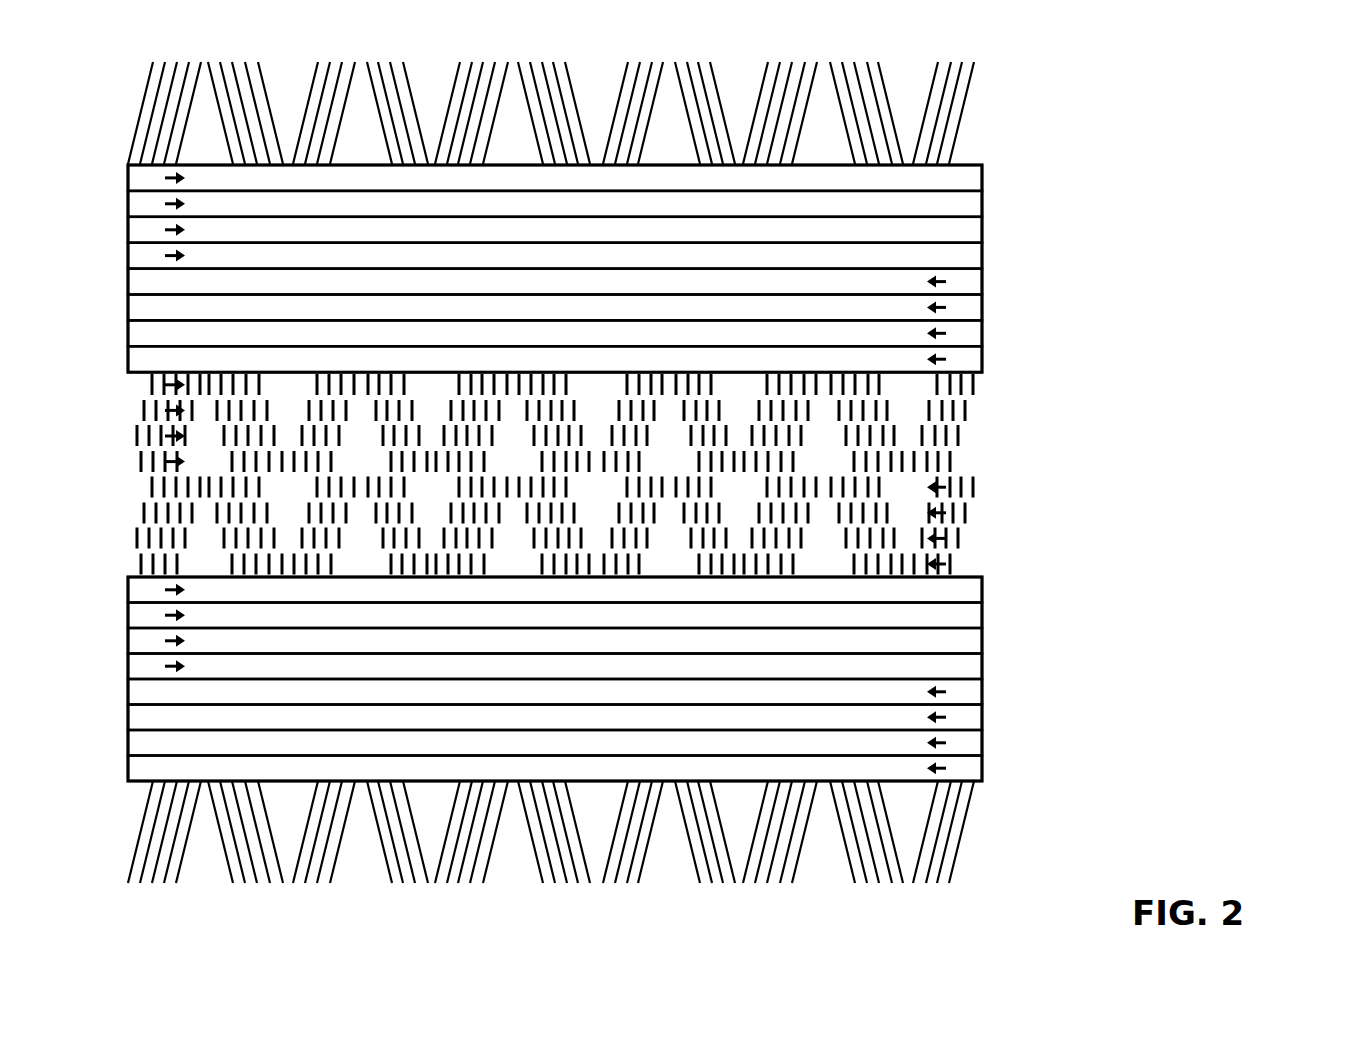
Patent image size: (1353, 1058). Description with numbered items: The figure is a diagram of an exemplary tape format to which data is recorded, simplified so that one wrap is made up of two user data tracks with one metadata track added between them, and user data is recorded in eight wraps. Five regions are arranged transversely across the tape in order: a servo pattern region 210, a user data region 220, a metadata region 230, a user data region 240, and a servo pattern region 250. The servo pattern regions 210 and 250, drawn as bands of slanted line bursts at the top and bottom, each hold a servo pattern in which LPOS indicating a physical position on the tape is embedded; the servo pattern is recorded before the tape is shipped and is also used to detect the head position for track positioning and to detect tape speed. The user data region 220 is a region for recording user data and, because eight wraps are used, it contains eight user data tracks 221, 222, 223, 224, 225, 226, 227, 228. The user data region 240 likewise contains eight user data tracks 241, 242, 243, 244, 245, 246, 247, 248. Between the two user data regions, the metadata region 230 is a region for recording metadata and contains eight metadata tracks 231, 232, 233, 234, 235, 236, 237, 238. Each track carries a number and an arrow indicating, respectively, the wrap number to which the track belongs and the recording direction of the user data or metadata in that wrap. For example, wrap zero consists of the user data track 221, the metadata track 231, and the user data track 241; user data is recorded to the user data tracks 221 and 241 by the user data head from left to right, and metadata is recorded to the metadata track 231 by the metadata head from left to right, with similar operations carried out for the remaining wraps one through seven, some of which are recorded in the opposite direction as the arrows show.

The servo pattern region 210 is at (1067, 162).
The user data region 220 is at (712, 268).
The user data track 221 is at (985, 179).
The user data track 222 is at (985, 205).
The user data track 223 is at (985, 231).
The user data track 224 is at (985, 257).
The user data track 225 is at (985, 283).
The user data track 226 is at (985, 308).
The user data track 227 is at (985, 334).
The user data track 228 is at (587, 359).
The metadata region 230 is at (715, 474).
The metadata track 231 is at (985, 386).
The metadata track 232 is at (985, 411).
The metadata track 233 is at (985, 437).
The metadata track 234 is at (985, 463).
The metadata track 235 is at (985, 488).
The metadata track 236 is at (985, 514).
The metadata track 237 is at (985, 539).
The metadata track 238 is at (593, 563).
The user data region 240 is at (712, 679).
The user data track 241 is at (985, 591).
The user data track 242 is at (985, 616).
The user data track 243 is at (985, 642).
The user data track 244 is at (985, 667).
The user data track 245 is at (985, 693).
The user data track 246 is at (985, 718).
The user data track 247 is at (985, 744).
The user data track 248 is at (587, 768).
The servo pattern region 250 is at (1067, 884).